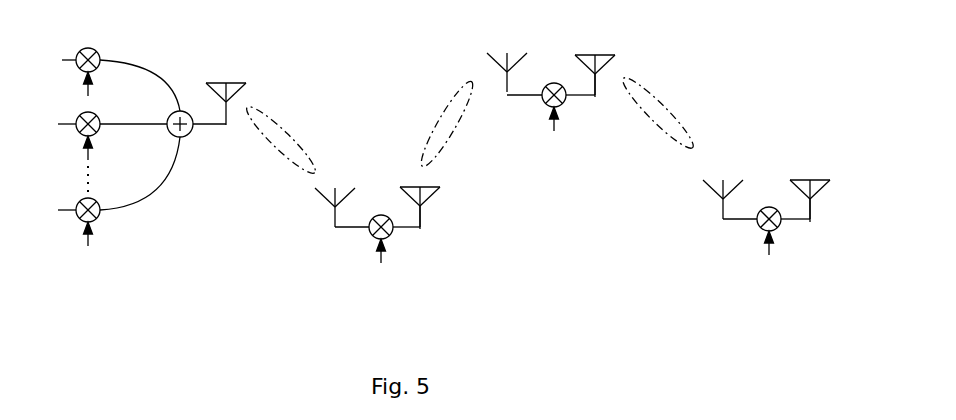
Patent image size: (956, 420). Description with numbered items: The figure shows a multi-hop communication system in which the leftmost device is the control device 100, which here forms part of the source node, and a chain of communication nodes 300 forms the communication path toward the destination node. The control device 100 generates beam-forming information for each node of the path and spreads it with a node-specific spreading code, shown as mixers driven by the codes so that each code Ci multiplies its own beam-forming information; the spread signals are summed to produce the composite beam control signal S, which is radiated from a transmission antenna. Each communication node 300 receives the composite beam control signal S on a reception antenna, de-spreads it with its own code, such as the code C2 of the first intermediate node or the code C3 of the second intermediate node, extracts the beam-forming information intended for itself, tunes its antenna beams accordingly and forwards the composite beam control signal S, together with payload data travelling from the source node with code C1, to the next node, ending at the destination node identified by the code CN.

The control device 100 is at (403, 150).
The communication node 300 is at (572, 164).
The composite beam control signal S is at (470, 125).
The spreading code of the source node C1 is at (105, 88).
The spreading code of the first intermediate node C2 is at (384, 271).
The spreading code of the second intermediate node C3 is at (552, 142).
The communication node identity Ci is at (102, 149).
The spreading code of the destination node CN is at (430, 256).